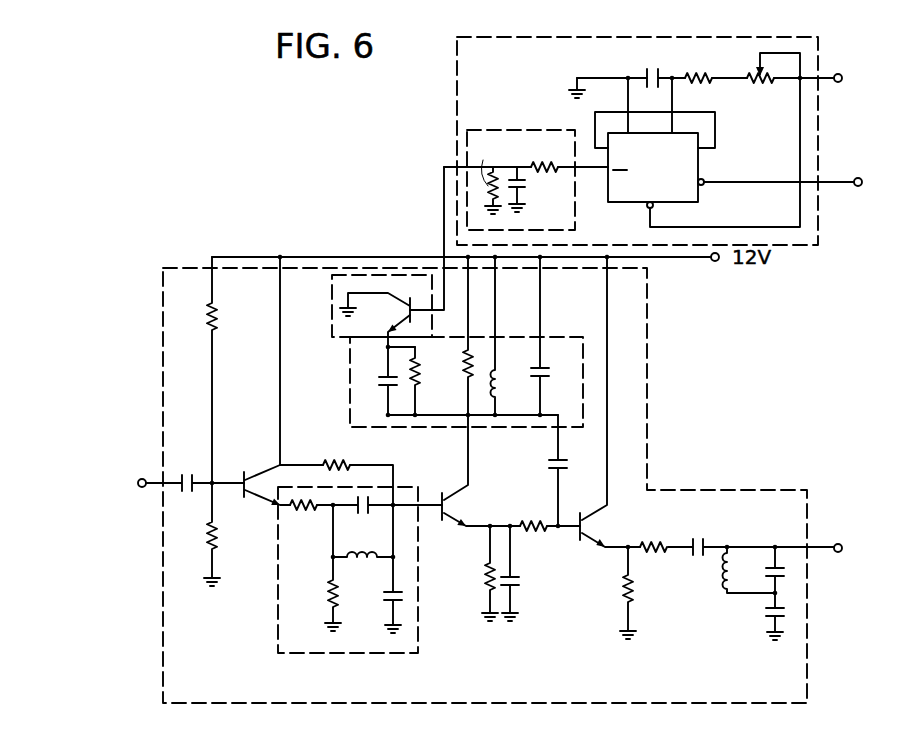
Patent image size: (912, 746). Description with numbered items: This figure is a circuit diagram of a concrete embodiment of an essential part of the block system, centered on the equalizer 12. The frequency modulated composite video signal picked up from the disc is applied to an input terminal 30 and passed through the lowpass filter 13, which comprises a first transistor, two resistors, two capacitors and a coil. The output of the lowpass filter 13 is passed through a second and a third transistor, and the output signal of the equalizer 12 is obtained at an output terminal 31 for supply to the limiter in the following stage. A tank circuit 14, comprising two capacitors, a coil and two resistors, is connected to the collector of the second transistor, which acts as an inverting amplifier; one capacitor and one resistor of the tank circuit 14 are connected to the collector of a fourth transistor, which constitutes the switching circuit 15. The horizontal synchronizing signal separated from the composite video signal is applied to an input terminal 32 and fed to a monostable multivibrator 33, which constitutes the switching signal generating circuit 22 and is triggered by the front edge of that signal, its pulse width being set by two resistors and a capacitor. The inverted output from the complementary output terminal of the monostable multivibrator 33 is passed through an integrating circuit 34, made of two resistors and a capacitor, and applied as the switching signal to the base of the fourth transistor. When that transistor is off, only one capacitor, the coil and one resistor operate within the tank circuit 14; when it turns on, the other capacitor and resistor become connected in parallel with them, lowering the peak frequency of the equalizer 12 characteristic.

The equalizer 12 is at (649, 403).
The lowpass filter 13 is at (315, 655).
The tank circuit 14 is at (349, 370).
The switching circuit 15 is at (331, 284).
The switching signal generating circuit 22 is at (457, 70).
The input terminal 30 is at (142, 478).
The output terminal 31 is at (843, 549).
The input terminal 32 is at (858, 179).
The monostable multivibrator 33 is at (704, 187).
The integrating circuit 34 is at (478, 130).